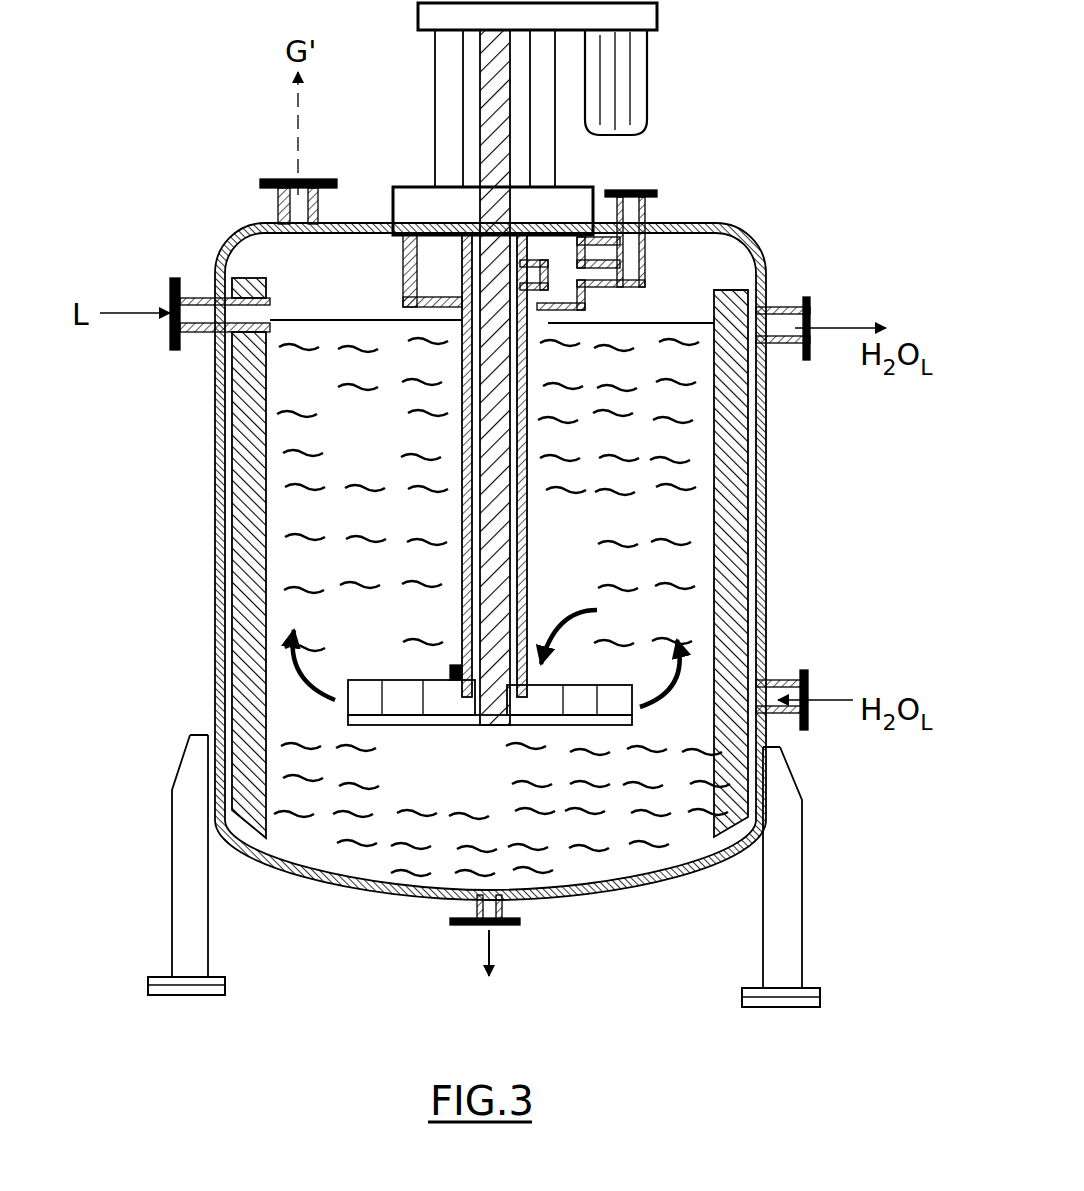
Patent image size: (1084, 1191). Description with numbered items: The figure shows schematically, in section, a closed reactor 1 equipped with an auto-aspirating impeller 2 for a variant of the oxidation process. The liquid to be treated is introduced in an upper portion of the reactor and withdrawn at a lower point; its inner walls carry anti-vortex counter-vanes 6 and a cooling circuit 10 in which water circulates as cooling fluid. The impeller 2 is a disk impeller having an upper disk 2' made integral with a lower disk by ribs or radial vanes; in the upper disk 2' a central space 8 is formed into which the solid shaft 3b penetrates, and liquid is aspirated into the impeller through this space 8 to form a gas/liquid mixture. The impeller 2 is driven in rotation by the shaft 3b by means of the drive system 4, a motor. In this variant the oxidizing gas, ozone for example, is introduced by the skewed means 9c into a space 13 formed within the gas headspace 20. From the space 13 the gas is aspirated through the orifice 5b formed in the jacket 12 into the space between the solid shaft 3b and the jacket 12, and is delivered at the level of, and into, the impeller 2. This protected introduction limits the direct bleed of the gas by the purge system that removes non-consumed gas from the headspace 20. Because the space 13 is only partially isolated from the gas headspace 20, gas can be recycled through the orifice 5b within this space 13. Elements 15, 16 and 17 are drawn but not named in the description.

The closed reactor 1 is at (796, 543).
The auto-aspirating impeller 2 is at (429, 771).
The upper disk 2' is at (411, 658).
The solid shaft 3b is at (512, 392).
The drive system 4 is at (630, 78).
The orifice 5b is at (542, 250).
The anti-vortex counter-vanes 6 is at (250, 587).
The central space 8 is at (455, 666).
The gas introduction means 9c is at (654, 258).
The cooling circuit 10 is at (228, 537).
The jacket 12 is at (527, 457).
The space 13 is at (555, 302).
The agitator rotor 15 is at (454, 700).
The liquid 16 is at (350, 470).
The drain outlet 17 is at (465, 875).
The gas headspace 20 is at (375, 297).